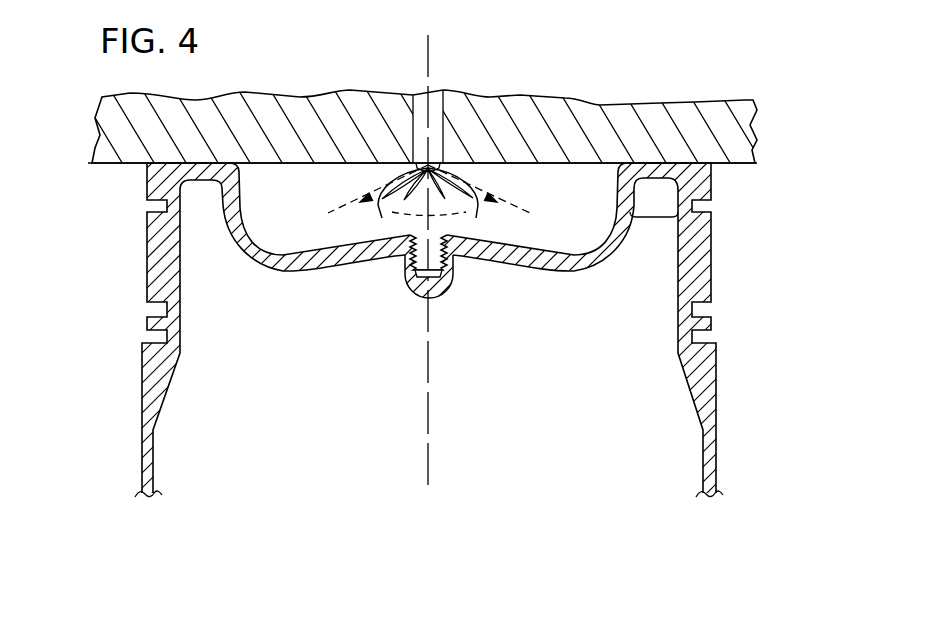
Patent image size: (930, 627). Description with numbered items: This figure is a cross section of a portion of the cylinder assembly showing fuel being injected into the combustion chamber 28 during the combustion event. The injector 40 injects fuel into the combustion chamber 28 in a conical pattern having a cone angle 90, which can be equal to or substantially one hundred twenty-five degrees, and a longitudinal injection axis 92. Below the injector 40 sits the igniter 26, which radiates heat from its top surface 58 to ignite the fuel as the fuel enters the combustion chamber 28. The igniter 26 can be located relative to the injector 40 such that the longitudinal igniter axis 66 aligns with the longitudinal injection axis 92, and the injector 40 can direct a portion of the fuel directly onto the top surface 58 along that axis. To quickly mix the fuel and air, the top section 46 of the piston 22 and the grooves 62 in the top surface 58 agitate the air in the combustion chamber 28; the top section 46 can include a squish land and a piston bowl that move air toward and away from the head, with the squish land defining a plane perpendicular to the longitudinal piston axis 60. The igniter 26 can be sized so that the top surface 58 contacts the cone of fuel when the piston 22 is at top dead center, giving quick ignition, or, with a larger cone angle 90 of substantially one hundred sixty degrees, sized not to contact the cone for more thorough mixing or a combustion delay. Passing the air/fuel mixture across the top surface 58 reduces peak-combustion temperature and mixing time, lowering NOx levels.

The injector 40 is at (416, 107).
The longitudinal injection axis 92 is at (432, 68).
The longitudinal igniter axis 66 is at (460, 263).
The longitudinal piston axis 60 is at (429, 405).
The top surface 58 is at (447, 163).
The grooves 62 is at (412, 190).
The piston 22 is at (465, 329).
The top section 46 is at (122, 236).
The igniter 26 is at (342, 229).
The cone angle 90 is at (402, 216).
The combustion chamber 28 is at (580, 194).